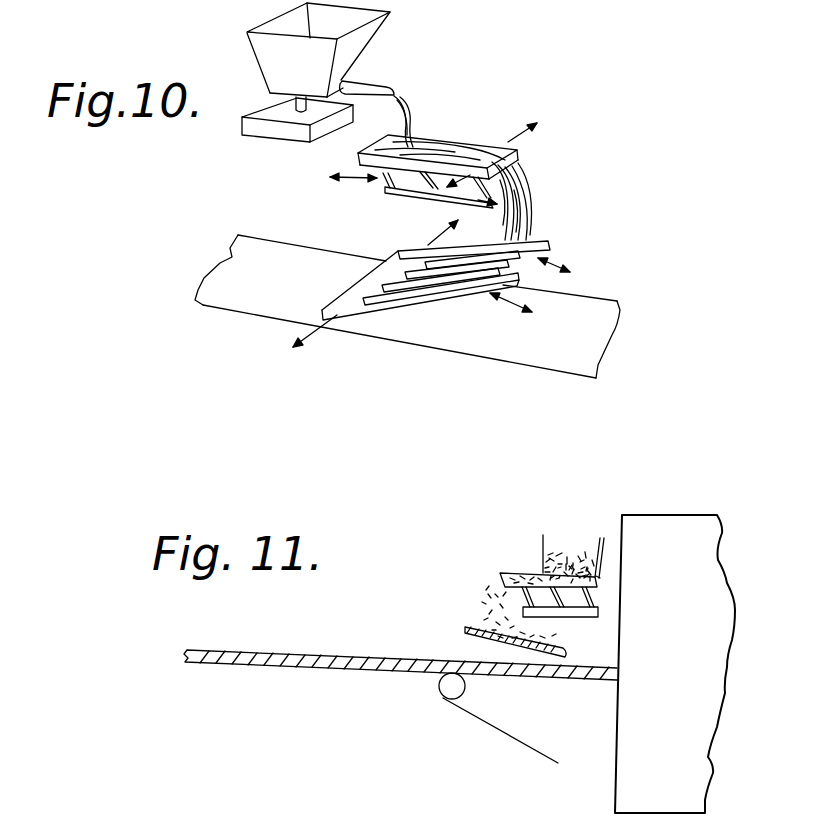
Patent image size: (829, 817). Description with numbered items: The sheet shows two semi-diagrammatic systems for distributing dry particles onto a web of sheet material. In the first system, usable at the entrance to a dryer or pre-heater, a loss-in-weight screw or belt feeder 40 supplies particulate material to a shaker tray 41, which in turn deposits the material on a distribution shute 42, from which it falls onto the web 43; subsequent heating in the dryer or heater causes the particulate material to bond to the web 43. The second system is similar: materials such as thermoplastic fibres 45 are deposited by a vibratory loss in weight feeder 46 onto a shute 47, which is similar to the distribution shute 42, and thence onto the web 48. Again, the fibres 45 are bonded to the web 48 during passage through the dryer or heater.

In FIG. 10, the loss-in-weight screw or belt feeder 40 is at (383, 33).
In FIG. 10, the shaker tray 41 is at (458, 138).
In FIG. 10, the distribution shute 42 is at (538, 242).
In FIG. 10, the web 43 is at (595, 297).
In FIG. 11, the thermoplastic fibres 45 is at (567, 553).
In FIG. 11, the vibratory loss in weight feeder 46 is at (522, 570).
In FIG. 11, the shute 47 is at (462, 630).
In FIG. 11, the web 48 is at (373, 664).